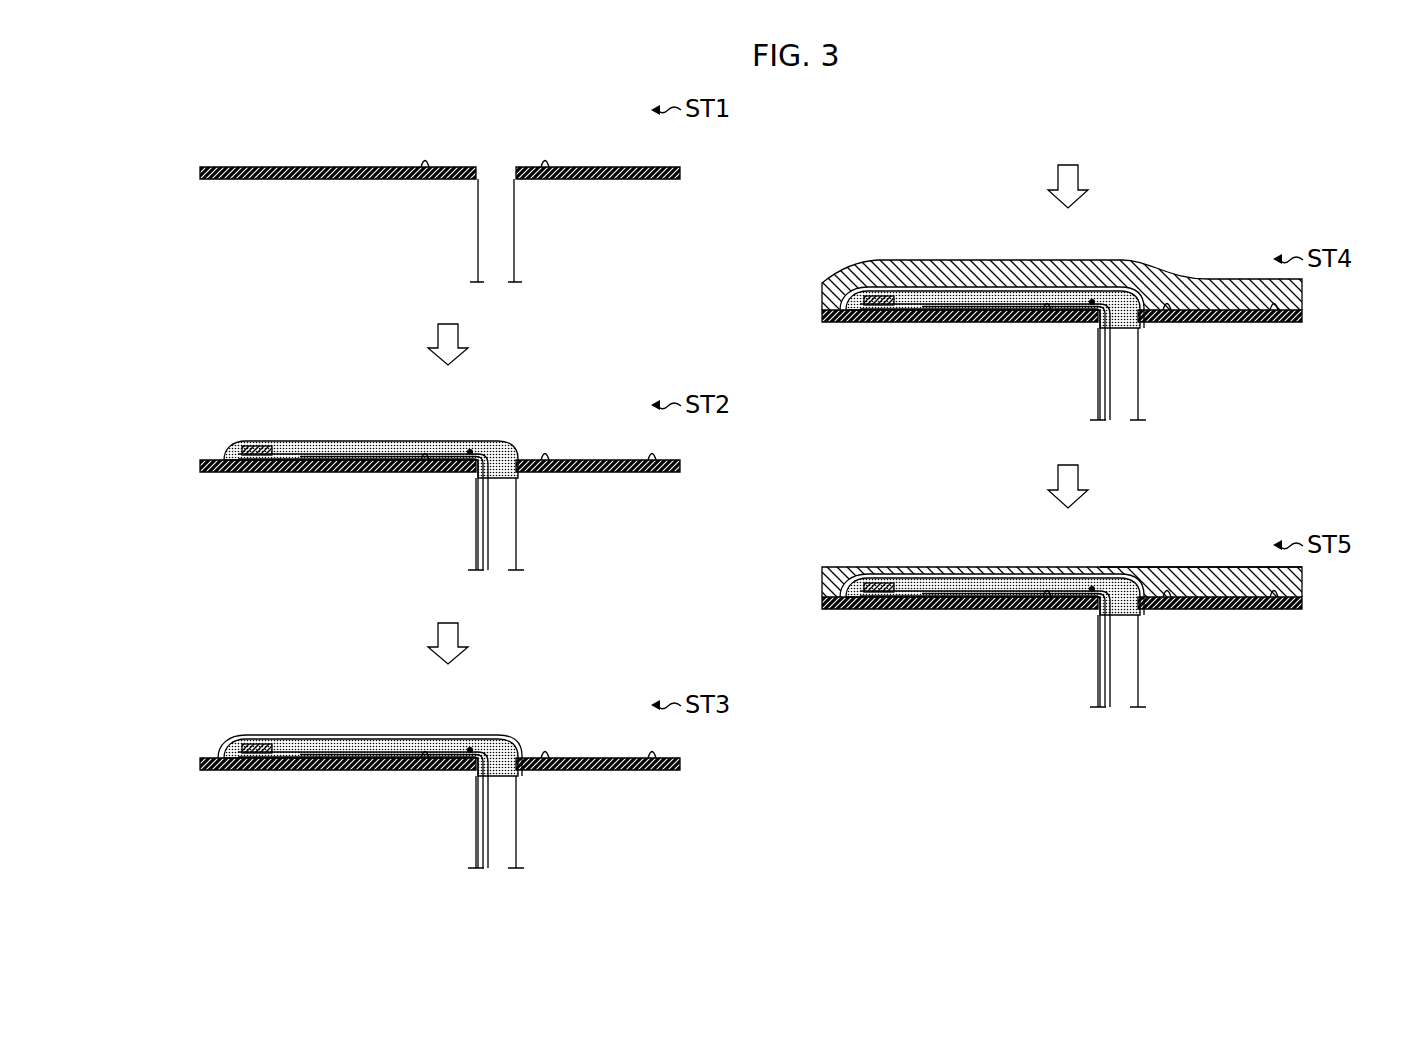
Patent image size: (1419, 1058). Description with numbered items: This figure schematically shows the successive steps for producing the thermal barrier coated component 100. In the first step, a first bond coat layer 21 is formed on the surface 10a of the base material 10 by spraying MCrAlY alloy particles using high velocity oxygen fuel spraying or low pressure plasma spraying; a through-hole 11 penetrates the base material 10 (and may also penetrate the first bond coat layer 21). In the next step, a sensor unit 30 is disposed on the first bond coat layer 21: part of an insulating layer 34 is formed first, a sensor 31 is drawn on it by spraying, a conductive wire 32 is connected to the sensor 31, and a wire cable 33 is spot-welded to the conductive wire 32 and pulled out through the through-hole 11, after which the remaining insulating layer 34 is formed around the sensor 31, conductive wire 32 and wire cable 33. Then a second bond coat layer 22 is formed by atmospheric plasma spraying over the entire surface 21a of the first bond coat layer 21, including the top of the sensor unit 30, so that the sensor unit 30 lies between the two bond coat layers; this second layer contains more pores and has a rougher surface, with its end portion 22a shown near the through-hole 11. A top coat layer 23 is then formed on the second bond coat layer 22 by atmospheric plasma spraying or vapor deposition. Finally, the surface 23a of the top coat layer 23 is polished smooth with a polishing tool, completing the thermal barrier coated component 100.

The base material 10 is at (1248, 597).
The surface of the base material 10a is at (1170, 609).
The through-hole 11 is at (1134, 705).
The first bond coat layer 21 is at (1220, 609).
The surface of the first bond coat layer 21a is at (1275, 609).
The second bond coat layer 22 is at (994, 574).
The film end portion 22a is at (1092, 587).
The top coat layer 23 is at (1170, 575).
The surface of the top coat layer 23a is at (1127, 567).
The sensor unit 30 is at (855, 573).
The sensor 31 is at (883, 583).
The conductive wire 32 is at (919, 591).
The wire cable 33 is at (1109, 707).
The insulating layer 34 is at (955, 595).
The thermal barrier coated component 100 is at (1306, 583).